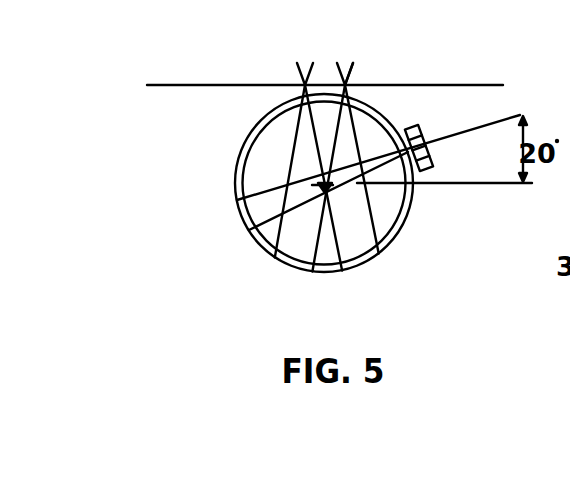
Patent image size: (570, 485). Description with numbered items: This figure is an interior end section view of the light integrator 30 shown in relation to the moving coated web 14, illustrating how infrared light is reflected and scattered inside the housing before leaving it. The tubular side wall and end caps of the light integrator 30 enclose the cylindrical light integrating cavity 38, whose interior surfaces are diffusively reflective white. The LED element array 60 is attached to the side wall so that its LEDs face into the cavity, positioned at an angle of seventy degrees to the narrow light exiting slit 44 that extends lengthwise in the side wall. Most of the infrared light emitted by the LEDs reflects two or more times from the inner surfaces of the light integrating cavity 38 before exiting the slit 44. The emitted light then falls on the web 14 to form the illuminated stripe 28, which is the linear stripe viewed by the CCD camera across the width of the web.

The moving coated web 14 is at (181, 80).
The illuminated stripe 28 is at (288, 58).
The light integrator 30 is at (388, 278).
The light integrating cavity 38 is at (270, 157).
The light exiting slit 44 is at (360, 76).
The LED element array 60 is at (424, 130).